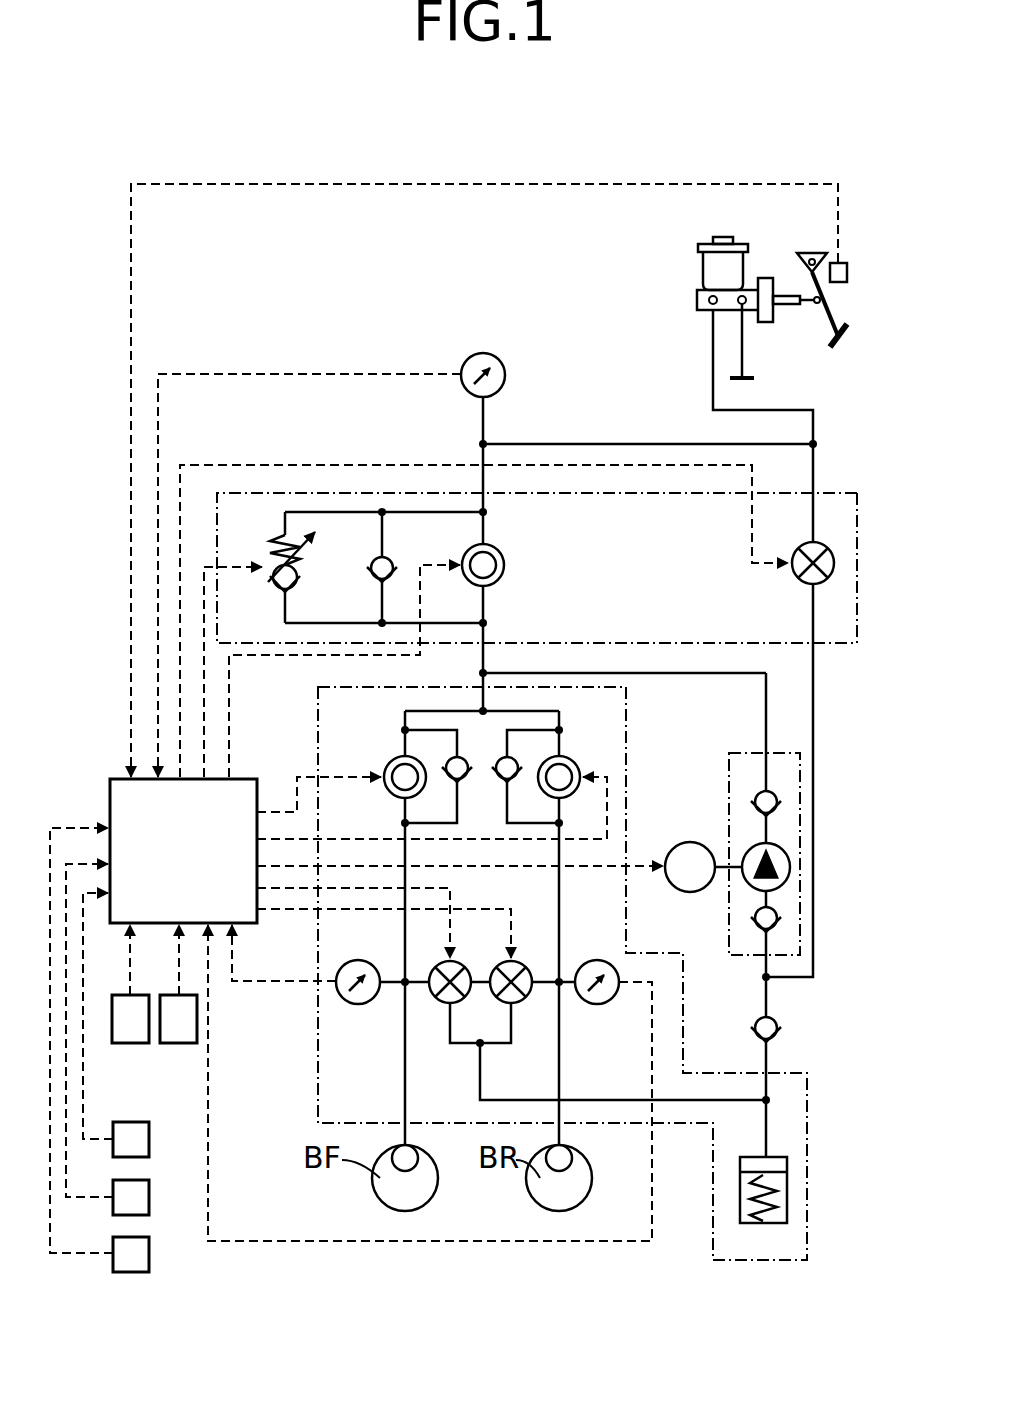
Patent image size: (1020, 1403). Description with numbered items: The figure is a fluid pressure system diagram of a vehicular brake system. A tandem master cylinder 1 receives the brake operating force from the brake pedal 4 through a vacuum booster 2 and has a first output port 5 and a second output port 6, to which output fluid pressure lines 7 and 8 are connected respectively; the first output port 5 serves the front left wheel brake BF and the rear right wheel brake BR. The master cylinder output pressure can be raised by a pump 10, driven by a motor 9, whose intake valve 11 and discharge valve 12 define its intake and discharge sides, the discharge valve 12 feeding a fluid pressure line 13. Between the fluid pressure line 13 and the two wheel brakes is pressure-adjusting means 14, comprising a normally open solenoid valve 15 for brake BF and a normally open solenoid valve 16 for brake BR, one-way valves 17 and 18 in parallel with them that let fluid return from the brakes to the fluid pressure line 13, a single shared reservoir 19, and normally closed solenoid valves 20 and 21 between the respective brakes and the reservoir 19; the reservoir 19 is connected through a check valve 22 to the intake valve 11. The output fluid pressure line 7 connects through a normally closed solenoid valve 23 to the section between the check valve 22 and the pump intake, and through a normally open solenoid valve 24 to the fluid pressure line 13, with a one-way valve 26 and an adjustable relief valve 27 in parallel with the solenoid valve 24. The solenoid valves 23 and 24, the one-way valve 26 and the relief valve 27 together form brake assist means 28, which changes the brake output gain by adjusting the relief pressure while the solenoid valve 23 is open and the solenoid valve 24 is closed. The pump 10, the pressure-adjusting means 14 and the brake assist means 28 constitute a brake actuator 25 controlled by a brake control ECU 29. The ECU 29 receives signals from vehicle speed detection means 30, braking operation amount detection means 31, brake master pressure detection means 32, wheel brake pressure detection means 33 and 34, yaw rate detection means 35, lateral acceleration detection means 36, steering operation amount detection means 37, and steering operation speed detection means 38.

The master cylinder 1 is at (700, 292).
The vacuum booster 2 is at (765, 278).
The brake pedal 4 is at (840, 332).
The first output port 5 is at (708, 303).
The second output port 6 is at (748, 306).
The output fluid pressure line 7 is at (556, 442).
The output fluid pressure line 8 is at (746, 352).
The motor 9 is at (684, 892).
The pump 10 is at (803, 756).
The intake valve 11 is at (780, 920).
The discharge valve 12 is at (780, 803).
The fluid pressure line 13 is at (541, 711).
The pressure-adjusting means 14 is at (318, 1080).
The normally open solenoid valve 15 is at (390, 765).
The normally open solenoid valve 16 is at (573, 766).
The one-way valve 17 is at (480, 750).
The one-way valve 18 is at (503, 781).
The reservoir 19 is at (787, 1210).
The normally closed solenoid valve 20 is at (445, 1005).
The normally closed solenoid valve 21 is at (515, 1005).
The check valve 22 is at (779, 1030).
The normally closed solenoid valve 23 is at (795, 572).
The normally open solenoid valve 24 is at (505, 566).
The brake actuator 25 is at (862, 573).
The one-way valve 26 is at (372, 560).
The relief valve 27 is at (275, 588).
The brake assist means 28 is at (826, 493).
The brake control ECU 29 is at (201, 869).
The vehicle speed detection means 30 is at (130, 1043).
The braking operation amount detection means 31 is at (848, 270).
The brake master pressure detection means 32 is at (490, 354).
The wheel brake pressure detection means 33 is at (360, 1005).
The wheel brake pressure detection means 34 is at (602, 1005).
The yaw rate detection means 35 is at (178, 1043).
The lateral acceleration detection means 36 is at (149, 1138).
The steering operation amount detection means 37 is at (149, 1196).
The steering operation speed detection means 38 is at (149, 1254).